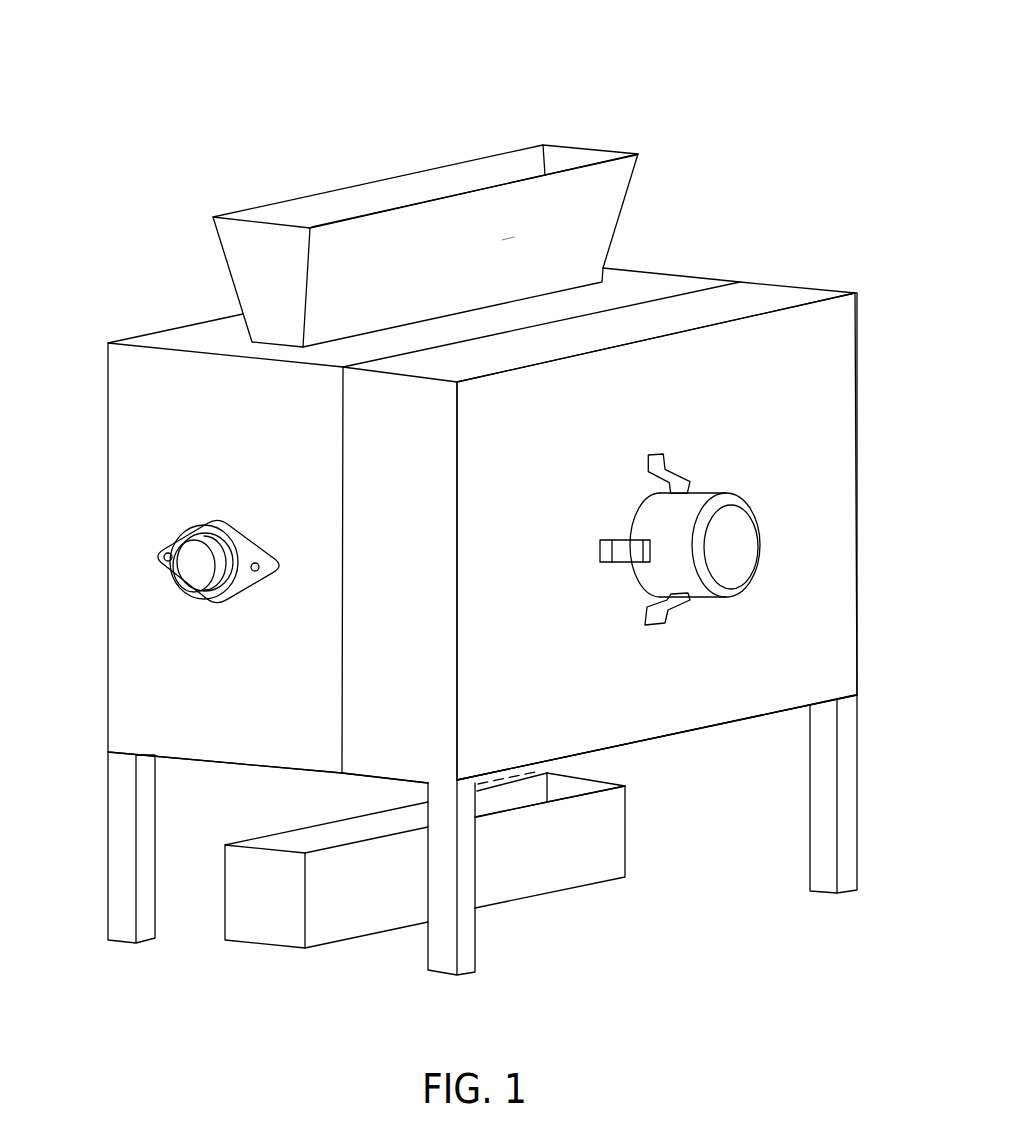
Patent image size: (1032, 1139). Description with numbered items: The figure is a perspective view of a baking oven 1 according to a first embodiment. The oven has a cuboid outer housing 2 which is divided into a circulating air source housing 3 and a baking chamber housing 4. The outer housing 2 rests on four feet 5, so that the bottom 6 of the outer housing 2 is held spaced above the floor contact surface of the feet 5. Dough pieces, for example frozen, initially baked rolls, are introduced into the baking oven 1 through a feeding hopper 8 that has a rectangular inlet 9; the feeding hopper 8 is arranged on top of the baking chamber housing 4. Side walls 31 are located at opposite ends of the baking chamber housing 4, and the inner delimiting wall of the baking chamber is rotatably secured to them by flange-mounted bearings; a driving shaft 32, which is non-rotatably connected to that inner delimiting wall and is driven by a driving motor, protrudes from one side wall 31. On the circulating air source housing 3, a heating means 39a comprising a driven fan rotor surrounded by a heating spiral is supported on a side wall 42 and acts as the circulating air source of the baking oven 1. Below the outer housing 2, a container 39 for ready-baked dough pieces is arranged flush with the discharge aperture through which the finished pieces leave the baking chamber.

The baking oven 1 is at (445, 128).
The outer housing 2 is at (180, 335).
The circulating air source housing 3 is at (780, 292).
The baking chamber housing 4 is at (668, 283).
The feet 5 is at (145, 920).
The bottom 6 is at (740, 723).
The feeding hopper 8 is at (502, 240).
The rectangular inlet 9 is at (523, 158).
The side walls 31 is at (135, 472).
The driving shaft 32 is at (198, 573).
The container 39 is at (535, 851).
The heating means 39a is at (720, 502).
The side wall 42 is at (820, 548).